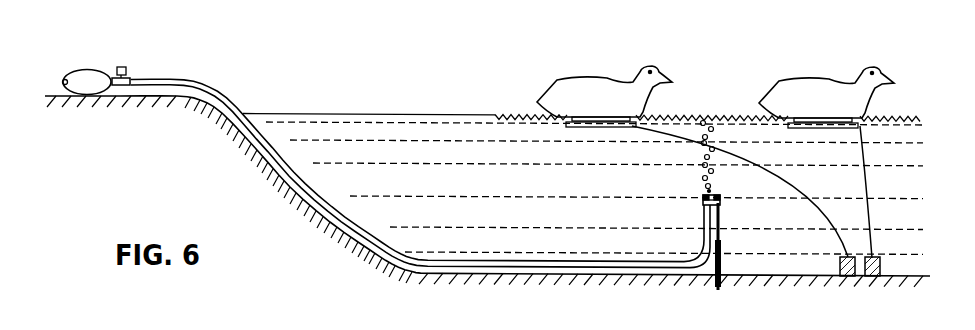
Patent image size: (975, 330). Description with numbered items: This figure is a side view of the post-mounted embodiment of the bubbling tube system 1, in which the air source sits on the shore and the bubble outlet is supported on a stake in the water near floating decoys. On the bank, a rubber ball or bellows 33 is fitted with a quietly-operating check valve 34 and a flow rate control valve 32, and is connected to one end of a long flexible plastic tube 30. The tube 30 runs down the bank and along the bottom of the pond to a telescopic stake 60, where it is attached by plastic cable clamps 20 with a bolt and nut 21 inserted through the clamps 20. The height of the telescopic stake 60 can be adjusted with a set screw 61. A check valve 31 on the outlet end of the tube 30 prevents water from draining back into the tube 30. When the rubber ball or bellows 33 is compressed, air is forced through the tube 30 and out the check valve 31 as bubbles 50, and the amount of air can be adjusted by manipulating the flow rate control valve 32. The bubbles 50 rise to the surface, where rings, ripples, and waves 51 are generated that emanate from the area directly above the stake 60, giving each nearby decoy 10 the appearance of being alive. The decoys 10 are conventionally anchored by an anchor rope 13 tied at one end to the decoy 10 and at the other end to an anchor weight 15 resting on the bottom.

The bubbling tube system 1 is at (229, 83).
The floating decoy 10 is at (596, 76).
The anchor rope 13 is at (872, 186).
The anchor weight 15 is at (882, 266).
The plastic cable clamps 20 is at (703, 203).
The bolt and nut 21 is at (719, 194).
The long flexible plastic tube 30 is at (160, 79).
The check valve 31 is at (703, 195).
The flow rate control valve 32 is at (123, 66).
The rubber ball or bellows 33 is at (87, 69).
The check valve 34 is at (62, 82).
The bubbles 50 is at (703, 165).
The rings, ripples, and waves 51 is at (522, 115).
The telescopic stake 60 is at (722, 223).
The set screw 61 is at (721, 243).